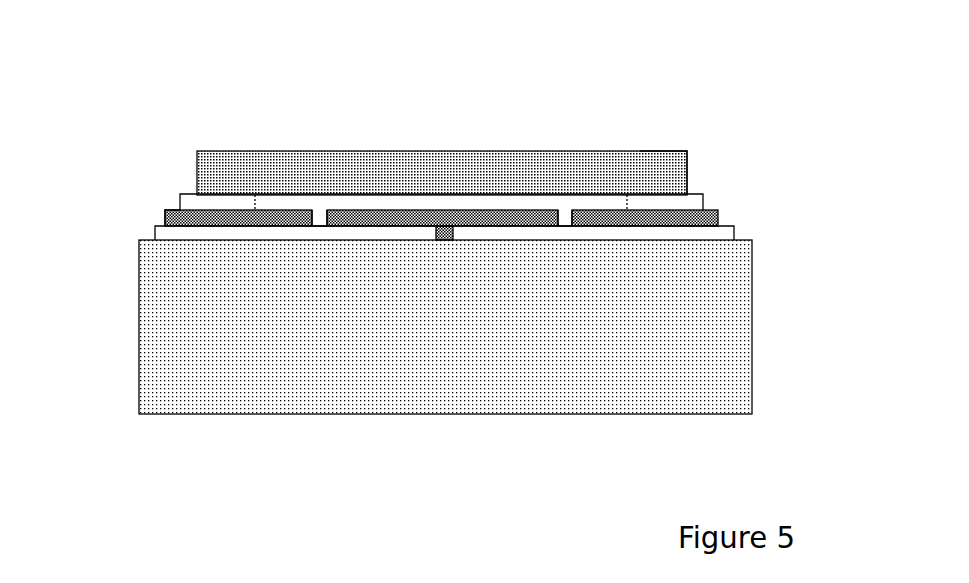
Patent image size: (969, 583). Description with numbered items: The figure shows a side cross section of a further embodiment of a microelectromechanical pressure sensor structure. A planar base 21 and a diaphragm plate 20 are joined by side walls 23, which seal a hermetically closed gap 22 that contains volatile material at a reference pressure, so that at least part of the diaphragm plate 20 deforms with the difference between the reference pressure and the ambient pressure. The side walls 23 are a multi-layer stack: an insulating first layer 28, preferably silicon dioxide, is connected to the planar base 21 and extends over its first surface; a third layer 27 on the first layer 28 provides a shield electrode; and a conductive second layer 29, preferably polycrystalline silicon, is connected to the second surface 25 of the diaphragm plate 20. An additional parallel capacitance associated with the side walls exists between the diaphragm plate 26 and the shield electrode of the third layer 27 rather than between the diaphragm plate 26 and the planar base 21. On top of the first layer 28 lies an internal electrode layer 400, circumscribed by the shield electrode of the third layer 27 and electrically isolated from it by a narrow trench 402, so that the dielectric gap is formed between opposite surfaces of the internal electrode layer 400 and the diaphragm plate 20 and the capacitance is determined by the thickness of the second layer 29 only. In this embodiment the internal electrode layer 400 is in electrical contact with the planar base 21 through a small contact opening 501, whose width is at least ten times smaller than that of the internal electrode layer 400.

The diaphragm plate 20 is at (487, 170).
The planar base 21 is at (700, 360).
The gap 22 is at (358, 200).
The side walls 23 is at (160, 202).
The second surface 25 is at (597, 203).
The diaphragm plate 26 is at (643, 150).
The third layer 27 is at (720, 224).
The first layer 28 is at (720, 230).
The second layer 29 is at (703, 195).
The internal electrode layer 400 is at (400, 205).
The trench 402 is at (316, 218).
The contact opening 501 is at (445, 207).